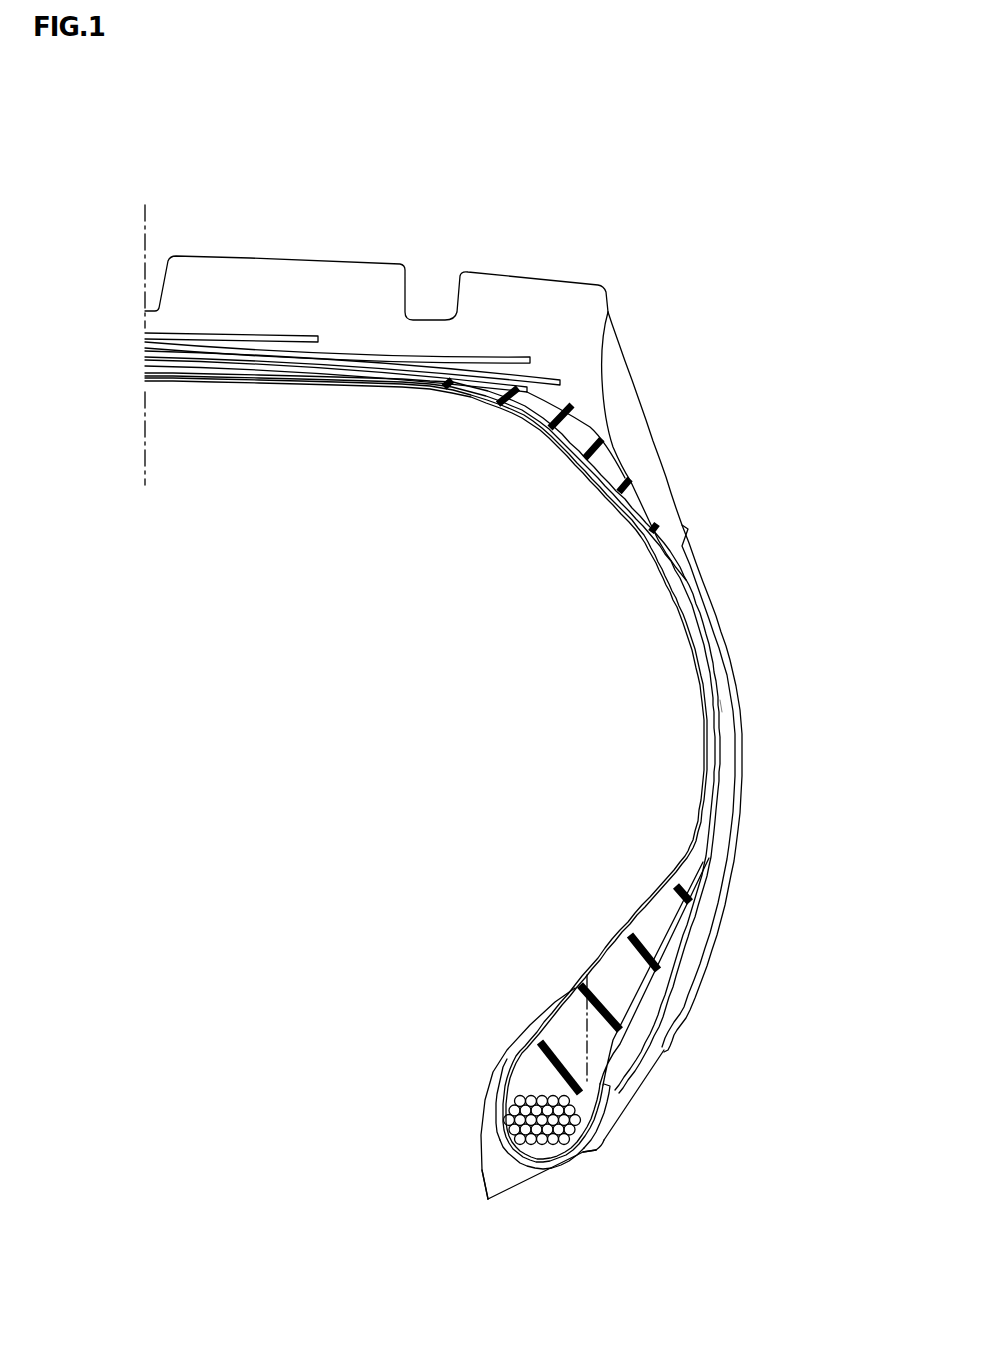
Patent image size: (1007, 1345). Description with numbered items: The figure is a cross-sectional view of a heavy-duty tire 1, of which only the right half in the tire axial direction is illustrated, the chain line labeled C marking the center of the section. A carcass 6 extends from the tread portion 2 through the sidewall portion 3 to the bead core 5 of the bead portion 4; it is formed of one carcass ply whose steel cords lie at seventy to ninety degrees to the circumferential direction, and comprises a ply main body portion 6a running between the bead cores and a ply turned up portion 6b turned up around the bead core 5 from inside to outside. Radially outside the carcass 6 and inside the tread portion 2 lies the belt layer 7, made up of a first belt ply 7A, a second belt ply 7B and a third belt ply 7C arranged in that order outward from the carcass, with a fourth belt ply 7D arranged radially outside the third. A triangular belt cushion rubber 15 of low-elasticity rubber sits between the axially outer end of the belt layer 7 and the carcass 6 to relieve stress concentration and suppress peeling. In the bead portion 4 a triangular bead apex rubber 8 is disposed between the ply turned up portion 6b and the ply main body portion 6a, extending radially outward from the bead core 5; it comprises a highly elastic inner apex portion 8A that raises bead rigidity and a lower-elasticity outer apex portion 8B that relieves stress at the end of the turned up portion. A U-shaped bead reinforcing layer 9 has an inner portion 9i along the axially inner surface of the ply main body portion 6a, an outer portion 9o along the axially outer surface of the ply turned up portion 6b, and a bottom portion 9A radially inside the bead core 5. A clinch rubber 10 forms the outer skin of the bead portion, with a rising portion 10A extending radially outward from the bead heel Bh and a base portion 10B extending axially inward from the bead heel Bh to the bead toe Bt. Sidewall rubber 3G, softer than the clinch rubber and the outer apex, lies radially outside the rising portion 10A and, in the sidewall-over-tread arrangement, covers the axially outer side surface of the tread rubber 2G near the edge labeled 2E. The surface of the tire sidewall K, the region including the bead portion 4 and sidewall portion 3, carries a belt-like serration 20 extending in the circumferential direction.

The heavy-duty tire 1 is at (537, 208).
The tire equator C is at (146, 332).
The tread portion 2 is at (345, 238).
The tread rubber 2G is at (485, 300).
The tread edge 2E is at (612, 273).
The belt layer 7 is at (52, 296).
The first belt ply 7A is at (145, 364).
The second belt ply 7B is at (145, 354).
The third belt ply 7C is at (145, 347).
The fourth belt ply 7D is at (145, 334).
The belt cushion rubber 15 is at (530, 403).
The carcass 6 is at (432, 772).
The ply main body portion 6a is at (683, 970).
The ply turned up portion 6b is at (680, 935).
The sidewall portion 3 is at (748, 880).
The sidewall rubber 3G is at (727, 717).
The serration 20 is at (742, 690).
The tire sidewall K is at (828, 905).
The bead portion 4 is at (682, 1062).
The bead apex rubber 8 is at (403, 917).
The inner apex portion 8A is at (580, 1022).
The outer apex portion 8B is at (627, 973).
The bead core 5 is at (545, 1128).
The bead reinforcing layer 9 is at (297, 1072).
The inner portion 9i is at (502, 1090).
The outer portion 9o is at (503, 1117).
The bottom portion 9A is at (523, 1163).
The clinch rubber 10 is at (800, 1090).
The rising portion 10A is at (622, 1097).
The base portion 10B is at (600, 1145).
The bead toe Bt is at (482, 1198).
The bead heel Bh is at (604, 1175).